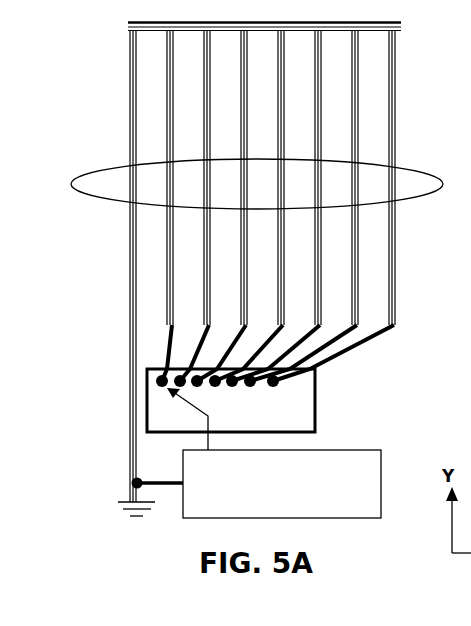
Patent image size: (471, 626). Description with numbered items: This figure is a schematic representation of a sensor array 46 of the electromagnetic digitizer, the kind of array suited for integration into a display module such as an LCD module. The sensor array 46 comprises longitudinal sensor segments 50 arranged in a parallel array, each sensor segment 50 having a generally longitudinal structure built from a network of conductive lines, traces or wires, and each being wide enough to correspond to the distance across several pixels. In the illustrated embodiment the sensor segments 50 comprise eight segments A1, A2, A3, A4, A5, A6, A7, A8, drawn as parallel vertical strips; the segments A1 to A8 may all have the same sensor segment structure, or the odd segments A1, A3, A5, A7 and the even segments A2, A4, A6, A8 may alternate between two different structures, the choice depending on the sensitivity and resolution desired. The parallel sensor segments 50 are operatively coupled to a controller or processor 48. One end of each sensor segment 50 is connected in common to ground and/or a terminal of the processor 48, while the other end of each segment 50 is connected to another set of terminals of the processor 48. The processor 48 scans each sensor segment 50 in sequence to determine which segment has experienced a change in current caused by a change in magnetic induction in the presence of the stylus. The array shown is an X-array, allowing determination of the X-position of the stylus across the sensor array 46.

The sensor array 46 is at (283, 263).
The processor 48 is at (315, 403).
The sensor segments 50 is at (80, 192).
The segment A1 is at (123, 266).
The segment A2 is at (160, 205).
The segment A3 is at (195, 205).
The segment A4 is at (222, 205).
The segment A5 is at (249, 205).
The segment A6 is at (276, 205).
The segment A7 is at (304, 205).
The segment A8 is at (412, 291).